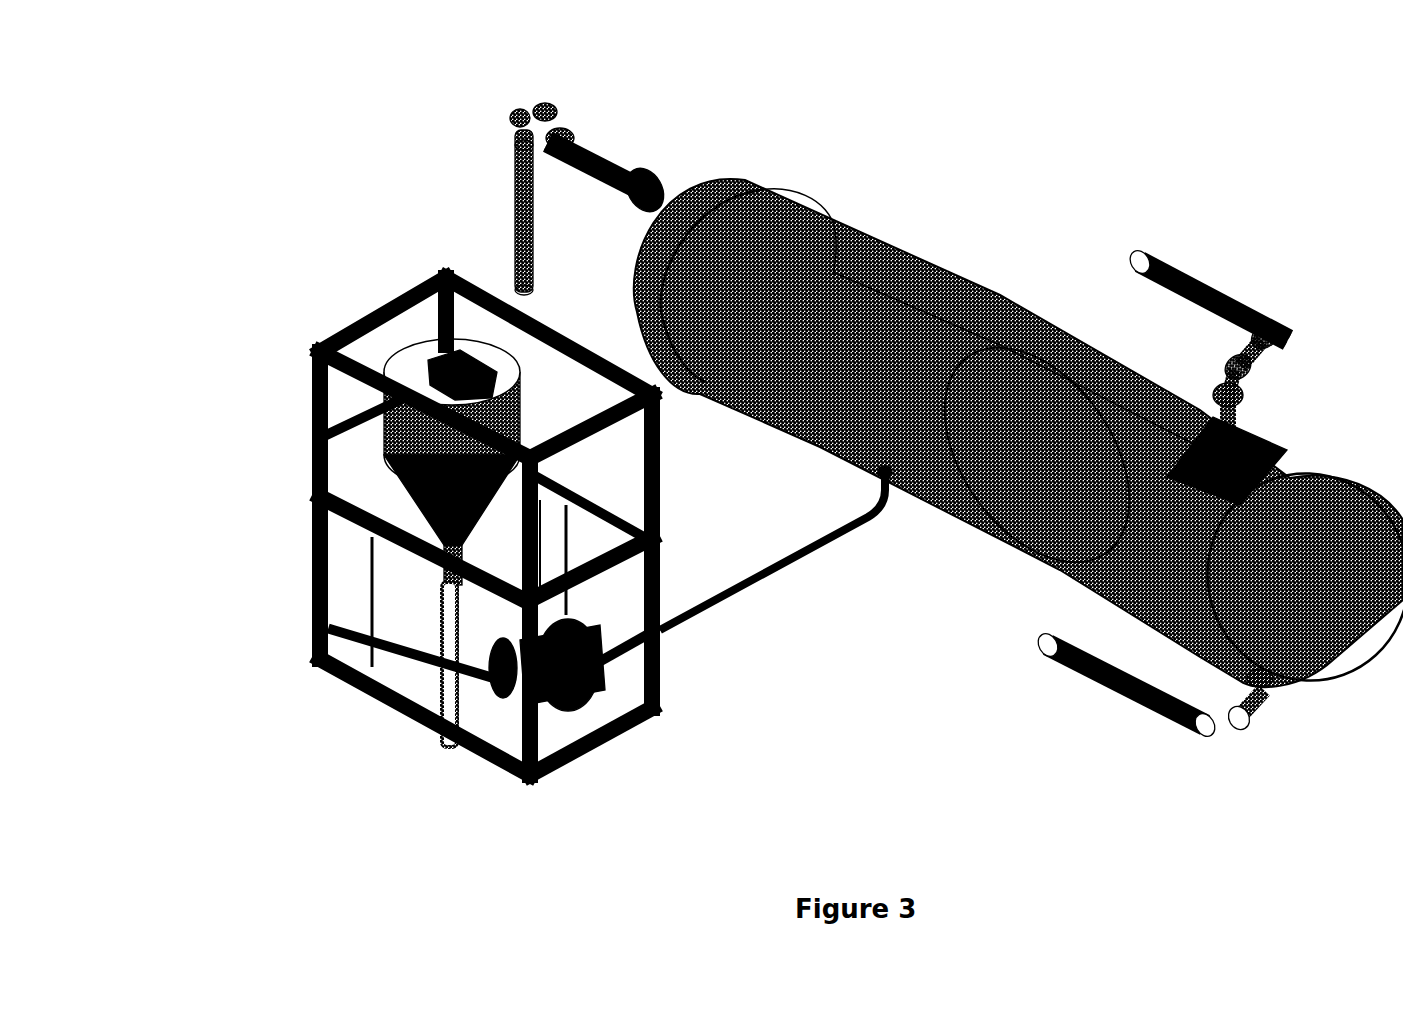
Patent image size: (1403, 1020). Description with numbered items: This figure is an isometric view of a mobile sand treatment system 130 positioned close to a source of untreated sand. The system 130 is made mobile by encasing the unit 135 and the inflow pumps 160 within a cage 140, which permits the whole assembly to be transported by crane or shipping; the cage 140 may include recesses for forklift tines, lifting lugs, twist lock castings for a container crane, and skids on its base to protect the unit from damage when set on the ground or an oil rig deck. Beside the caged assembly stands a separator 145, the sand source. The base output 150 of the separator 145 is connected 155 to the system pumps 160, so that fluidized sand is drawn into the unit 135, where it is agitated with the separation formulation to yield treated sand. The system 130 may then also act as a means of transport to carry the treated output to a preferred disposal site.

The mobile sand treatment system 130 is at (747, 457).
The unit 135 is at (373, 477).
The cage 140 is at (305, 391).
The separator 145 is at (945, 250).
The base output 150 is at (885, 470).
The connection 155 is at (768, 578).
The inflow pumps 160 is at (585, 685).